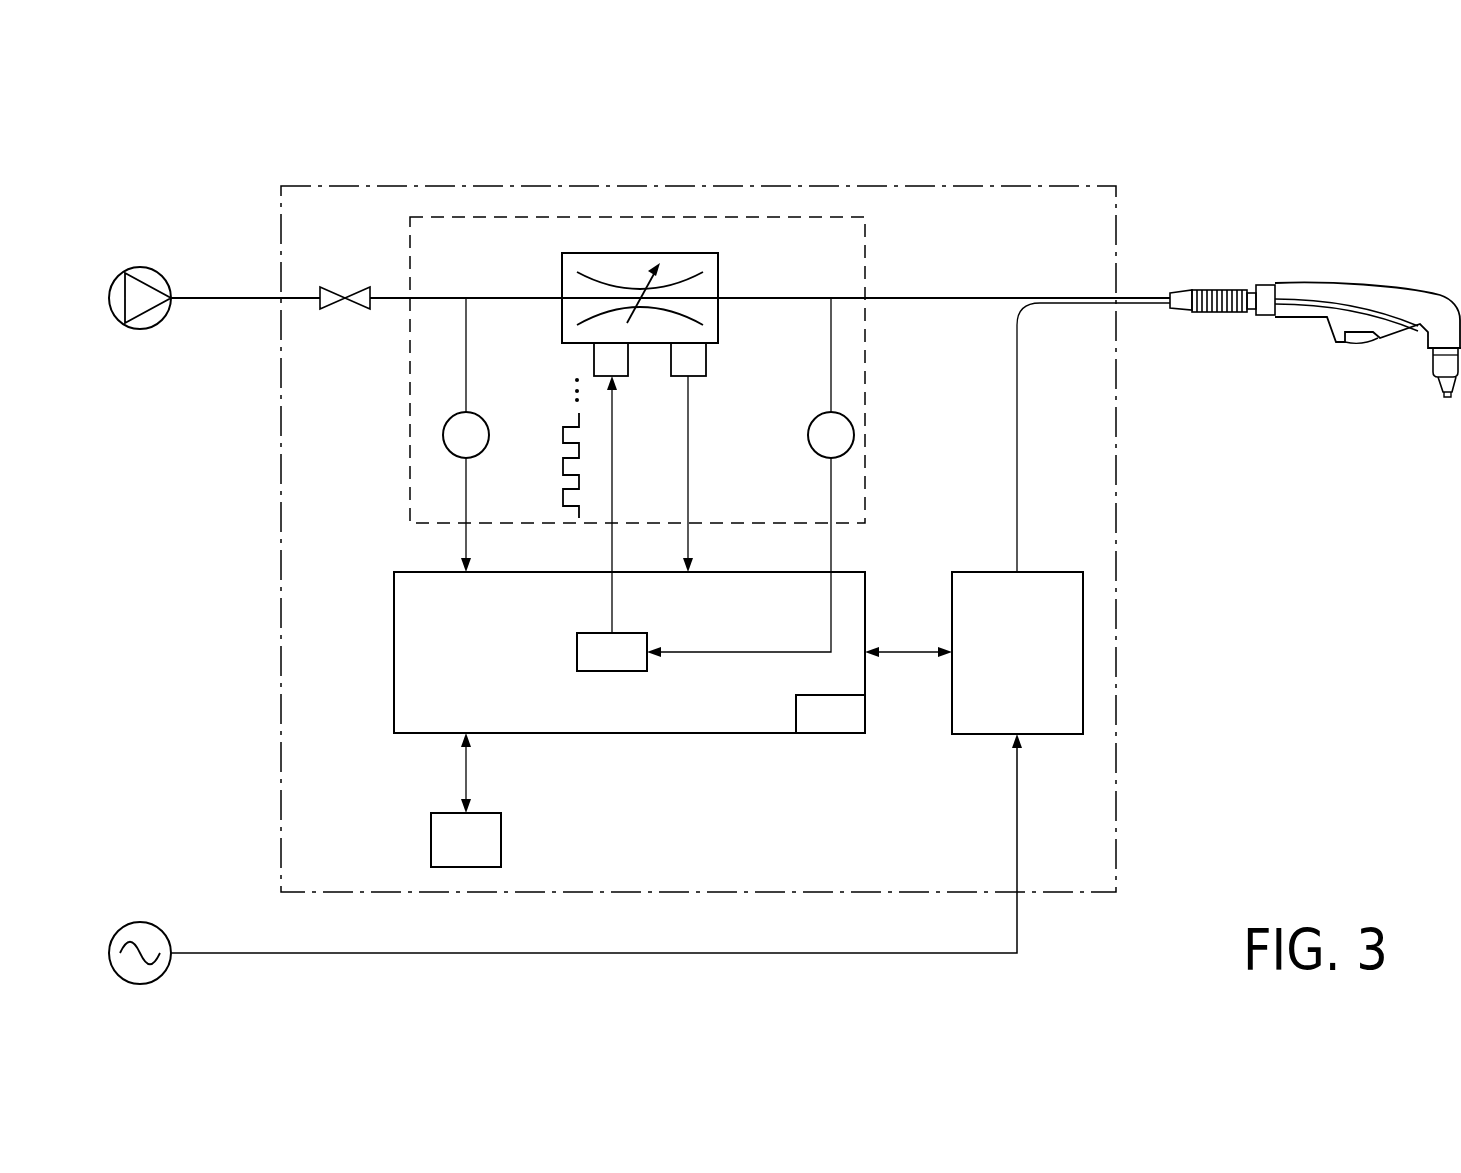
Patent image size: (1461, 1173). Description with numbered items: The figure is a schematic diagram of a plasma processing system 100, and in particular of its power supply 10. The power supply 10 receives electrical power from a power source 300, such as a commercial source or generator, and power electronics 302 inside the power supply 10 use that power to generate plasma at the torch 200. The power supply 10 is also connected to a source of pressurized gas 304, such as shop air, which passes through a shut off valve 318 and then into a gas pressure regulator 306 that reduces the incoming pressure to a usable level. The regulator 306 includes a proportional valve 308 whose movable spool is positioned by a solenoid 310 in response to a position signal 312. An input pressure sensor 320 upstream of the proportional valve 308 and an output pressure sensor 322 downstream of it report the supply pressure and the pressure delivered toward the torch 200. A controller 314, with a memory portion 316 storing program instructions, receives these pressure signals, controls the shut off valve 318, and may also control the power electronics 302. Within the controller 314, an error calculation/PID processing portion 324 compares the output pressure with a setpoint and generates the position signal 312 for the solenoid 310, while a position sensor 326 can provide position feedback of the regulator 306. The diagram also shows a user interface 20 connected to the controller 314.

The plasma processing system 100 is at (1116, 147).
The power supply 10 is at (281, 498).
The torch 200 is at (1371, 257).
The power source 300 is at (140, 922).
The power electronics 302 is at (1049, 572).
The source of pressurized gas 304 is at (140, 267).
The gas pressure regulator 306 is at (865, 250).
The proportional valve 308 is at (562, 268).
The solenoid 310 is at (594, 355).
The position signal 312 is at (540, 476).
The controller 314 is at (615, 733).
The memory portion 316 is at (796, 715).
The shut off valve 318 is at (333, 287).
The input pressure sensor 320 is at (443, 433).
The output pressure sensor 322 is at (854, 433).
The error calculation/PID processing portion 324 is at (577, 650).
The position sensor 326 is at (706, 355).
The user interface (UI) 20 is at (431, 842).